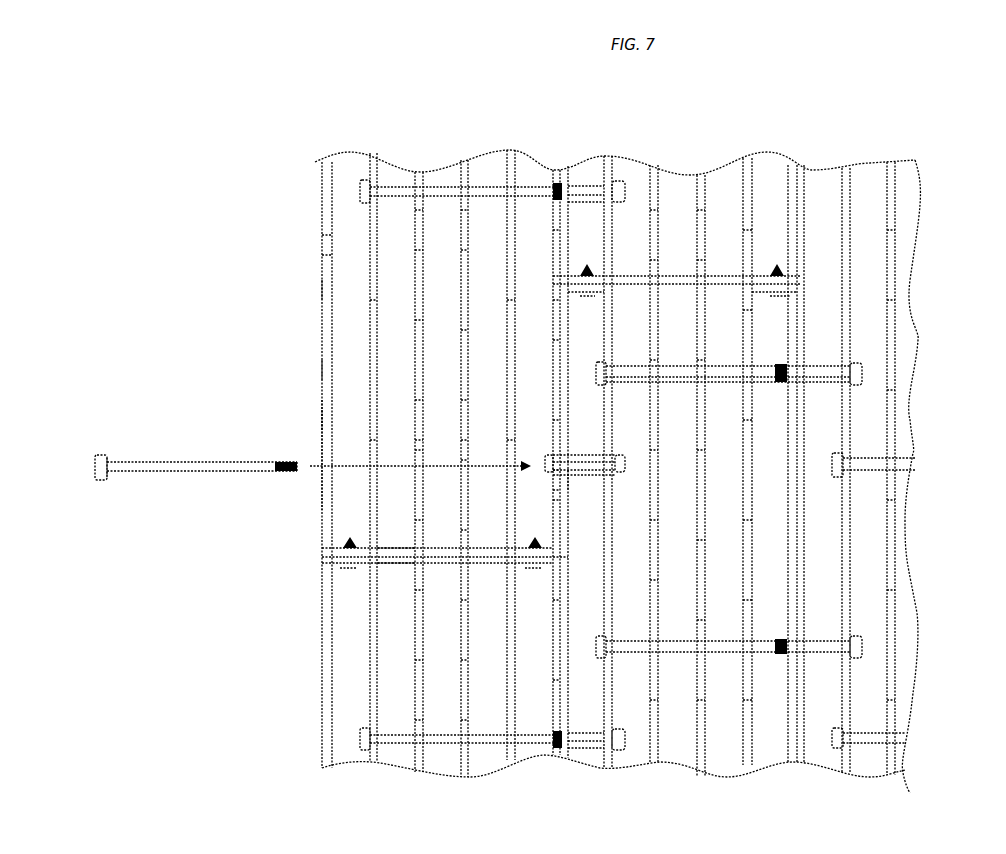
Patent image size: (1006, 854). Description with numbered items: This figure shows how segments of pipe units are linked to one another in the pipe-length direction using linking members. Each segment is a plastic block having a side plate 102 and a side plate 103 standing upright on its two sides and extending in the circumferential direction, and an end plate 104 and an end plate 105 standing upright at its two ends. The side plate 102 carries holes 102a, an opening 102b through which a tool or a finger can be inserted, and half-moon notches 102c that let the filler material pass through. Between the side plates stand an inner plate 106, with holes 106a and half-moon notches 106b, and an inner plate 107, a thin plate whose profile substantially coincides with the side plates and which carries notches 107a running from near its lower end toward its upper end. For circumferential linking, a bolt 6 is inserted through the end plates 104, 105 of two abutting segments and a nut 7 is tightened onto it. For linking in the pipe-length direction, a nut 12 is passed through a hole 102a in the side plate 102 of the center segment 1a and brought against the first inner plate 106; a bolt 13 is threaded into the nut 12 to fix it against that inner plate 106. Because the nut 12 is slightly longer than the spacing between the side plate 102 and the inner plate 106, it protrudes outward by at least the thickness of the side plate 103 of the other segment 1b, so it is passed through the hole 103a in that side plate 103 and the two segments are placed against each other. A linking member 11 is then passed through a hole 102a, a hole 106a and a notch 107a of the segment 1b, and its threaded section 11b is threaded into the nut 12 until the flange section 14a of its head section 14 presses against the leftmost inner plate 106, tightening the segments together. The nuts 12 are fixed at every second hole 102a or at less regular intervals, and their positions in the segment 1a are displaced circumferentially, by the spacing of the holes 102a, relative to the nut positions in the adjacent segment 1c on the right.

The segment 1a is at (705, 792).
The segment 1b is at (287, 200).
The segment 1c is at (935, 495).
The bolt 6 is at (330, 573).
The nut 7 is at (335, 543).
The linking member 11 is at (188, 462).
The threaded section 11b is at (285, 462).
The nut 12 is at (590, 452).
The bolt 13 is at (620, 452).
The head section 14 is at (100, 455).
The flange section 14a is at (110, 455).
The side plate 102 is at (322, 337).
The hole 102a is at (322, 290).
The opening 102b is at (322, 403).
The notch 102c is at (322, 245).
The side plate 103 is at (553, 168).
The hole 103a is at (548, 480).
The end plate 104 is at (392, 542).
The end plate 105 is at (392, 568).
The inner plate 106 is at (352, 152).
The hole 106a is at (378, 455).
The notch 106b is at (378, 240).
The inner plate 107 is at (410, 170).
The notch 107a is at (426, 455).